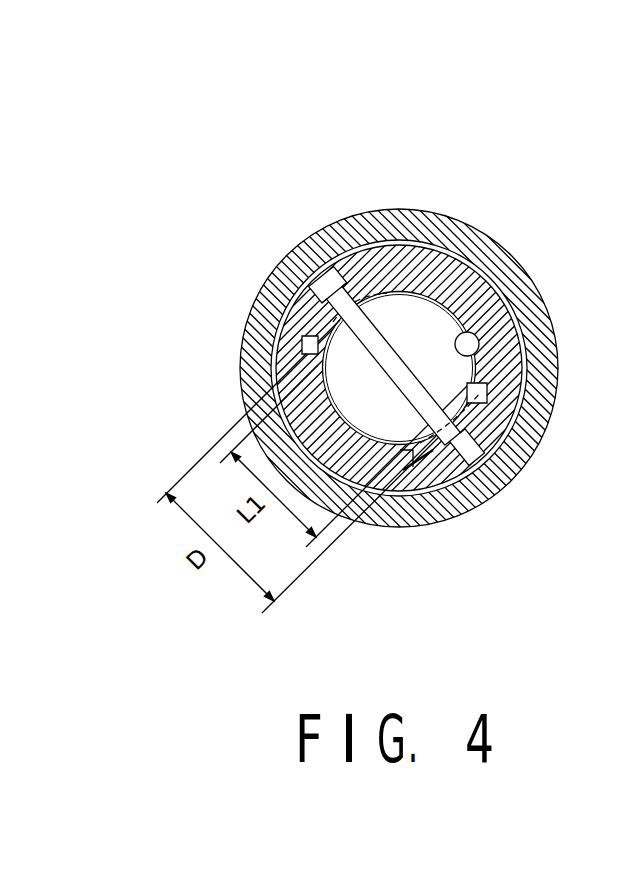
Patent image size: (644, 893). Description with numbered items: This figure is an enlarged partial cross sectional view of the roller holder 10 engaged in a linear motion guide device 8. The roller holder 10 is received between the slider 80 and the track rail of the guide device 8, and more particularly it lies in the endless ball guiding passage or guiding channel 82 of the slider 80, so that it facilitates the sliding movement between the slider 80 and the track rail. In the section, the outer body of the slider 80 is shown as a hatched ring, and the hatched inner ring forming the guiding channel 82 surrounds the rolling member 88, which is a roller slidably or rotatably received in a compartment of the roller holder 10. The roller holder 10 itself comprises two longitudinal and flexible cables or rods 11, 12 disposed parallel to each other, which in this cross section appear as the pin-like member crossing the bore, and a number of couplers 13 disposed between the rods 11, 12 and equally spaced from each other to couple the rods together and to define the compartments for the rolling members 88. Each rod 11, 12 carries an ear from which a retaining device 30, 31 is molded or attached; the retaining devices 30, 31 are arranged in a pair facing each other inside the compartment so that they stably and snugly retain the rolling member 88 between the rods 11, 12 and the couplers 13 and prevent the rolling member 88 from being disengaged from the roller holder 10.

The linear motion guide device 8 is at (487, 133).
The roller holder 10 is at (350, 300).
The rod 11 is at (305, 265).
The rod 12 is at (476, 455).
The coupler 13 is at (420, 400).
The retaining device 30 is at (307, 327).
The retaining device 31 is at (433, 452).
The slider 80 is at (318, 230).
The guiding channel 82 is at (470, 362).
The rolling member 88 is at (427, 322).